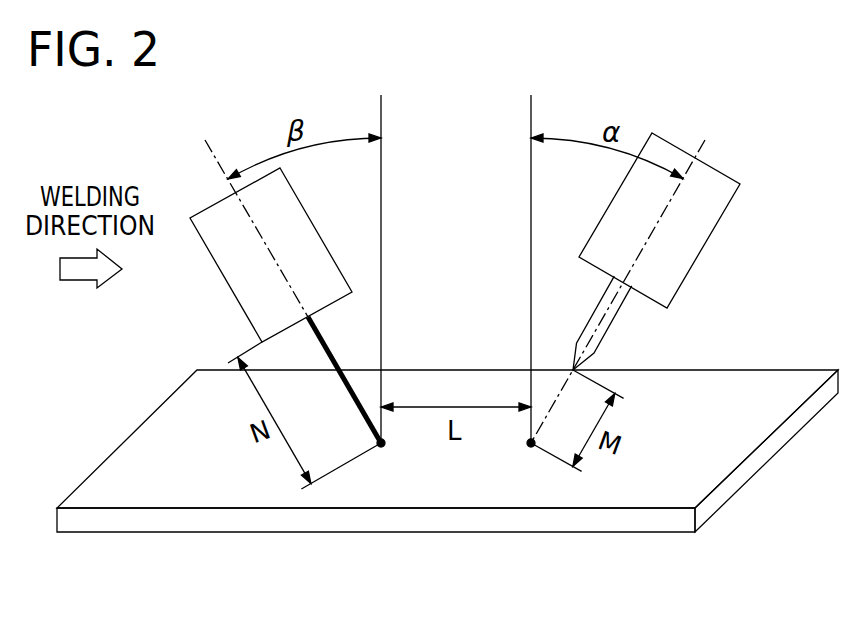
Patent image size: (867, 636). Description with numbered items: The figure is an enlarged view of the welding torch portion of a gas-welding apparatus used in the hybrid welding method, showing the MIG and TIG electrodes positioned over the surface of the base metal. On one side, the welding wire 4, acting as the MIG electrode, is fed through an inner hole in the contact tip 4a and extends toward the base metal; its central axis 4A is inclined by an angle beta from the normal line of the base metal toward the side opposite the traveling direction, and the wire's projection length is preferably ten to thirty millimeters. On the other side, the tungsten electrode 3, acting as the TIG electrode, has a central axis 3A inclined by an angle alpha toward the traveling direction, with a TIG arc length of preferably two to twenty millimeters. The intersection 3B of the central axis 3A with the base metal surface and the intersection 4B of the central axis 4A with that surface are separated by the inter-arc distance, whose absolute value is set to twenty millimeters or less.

The central axis of the welding wire 4A is at (214, 157).
The contact tip 4a is at (227, 282).
The welding wire 4 is at (323, 345).
The intersection 4B is at (384, 447).
The central axis of the tungsten electrode 3A is at (700, 150).
The tungsten electrode 3 is at (612, 330).
The intersection 3B is at (528, 447).